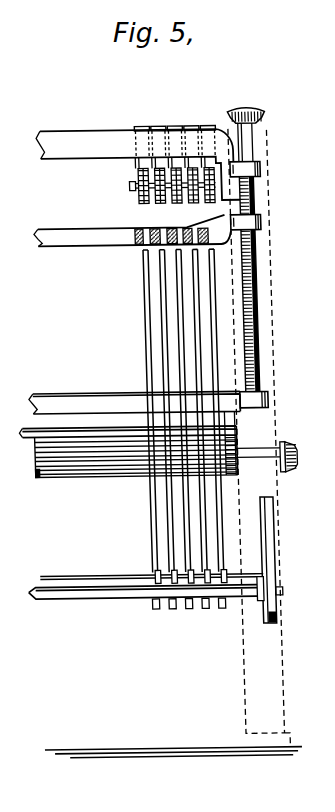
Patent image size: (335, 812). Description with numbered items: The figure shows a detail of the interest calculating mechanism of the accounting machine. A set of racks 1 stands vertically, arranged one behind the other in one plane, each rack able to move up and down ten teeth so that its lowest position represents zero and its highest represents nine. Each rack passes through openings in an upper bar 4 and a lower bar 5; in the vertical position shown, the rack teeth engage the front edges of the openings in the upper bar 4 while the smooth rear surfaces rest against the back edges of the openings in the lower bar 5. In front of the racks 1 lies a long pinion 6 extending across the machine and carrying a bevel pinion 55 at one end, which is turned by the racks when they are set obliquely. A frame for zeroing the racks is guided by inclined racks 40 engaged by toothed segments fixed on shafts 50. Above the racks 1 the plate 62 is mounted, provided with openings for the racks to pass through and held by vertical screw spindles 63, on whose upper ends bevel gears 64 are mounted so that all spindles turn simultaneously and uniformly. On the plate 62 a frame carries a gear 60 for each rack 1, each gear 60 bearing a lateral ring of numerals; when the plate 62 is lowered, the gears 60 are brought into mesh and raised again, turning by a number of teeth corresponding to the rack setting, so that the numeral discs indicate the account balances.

The racks 1 is at (0, 613).
The upper bar 4 is at (93, 397).
The lower bar 5 is at (34, 427).
The long pinion 6 is at (98, 470).
The inclined racks 40 is at (258, 501).
The shafts 50 is at (104, 586).
The bevel pinion 55 is at (289, 444).
The gears 60 is at (188, 204).
The plate 62 is at (140, 229).
The screw spindle 63 is at (260, 301).
The bevel gears 64 is at (267, 112).